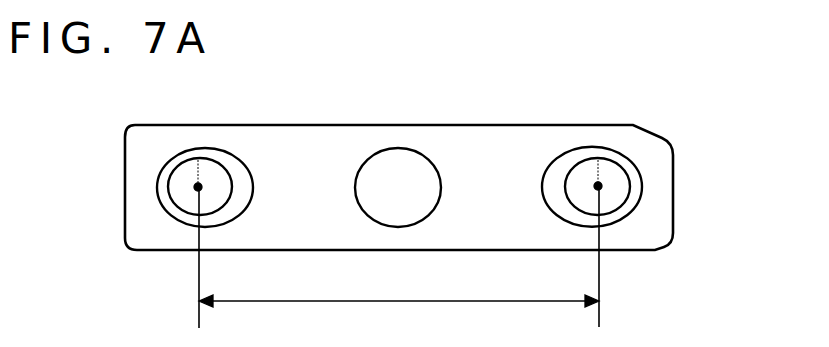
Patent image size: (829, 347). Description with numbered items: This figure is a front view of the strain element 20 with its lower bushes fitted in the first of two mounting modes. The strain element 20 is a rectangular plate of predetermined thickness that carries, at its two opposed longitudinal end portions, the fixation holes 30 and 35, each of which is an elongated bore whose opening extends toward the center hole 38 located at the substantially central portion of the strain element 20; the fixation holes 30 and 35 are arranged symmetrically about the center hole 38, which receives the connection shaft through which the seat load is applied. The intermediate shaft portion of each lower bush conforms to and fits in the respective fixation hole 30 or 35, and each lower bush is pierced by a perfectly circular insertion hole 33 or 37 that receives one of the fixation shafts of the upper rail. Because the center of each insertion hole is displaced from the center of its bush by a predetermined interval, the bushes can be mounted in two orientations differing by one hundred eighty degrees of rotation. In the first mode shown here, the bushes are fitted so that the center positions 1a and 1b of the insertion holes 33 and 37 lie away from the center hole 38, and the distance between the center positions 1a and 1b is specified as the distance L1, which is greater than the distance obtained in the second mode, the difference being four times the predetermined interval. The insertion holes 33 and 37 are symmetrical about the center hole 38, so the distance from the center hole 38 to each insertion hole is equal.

The strain element 20 is at (697, 182).
The fixation hole 30 is at (170, 157).
The insertion hole 33 is at (215, 168).
The fixation hole 35 is at (552, 158).
The insertion hole 37 is at (613, 168).
The center hole 38 is at (397, 167).
The center position 1a is at (197, 190).
The center position 1b is at (599, 190).
The distance L1 is at (399, 319).